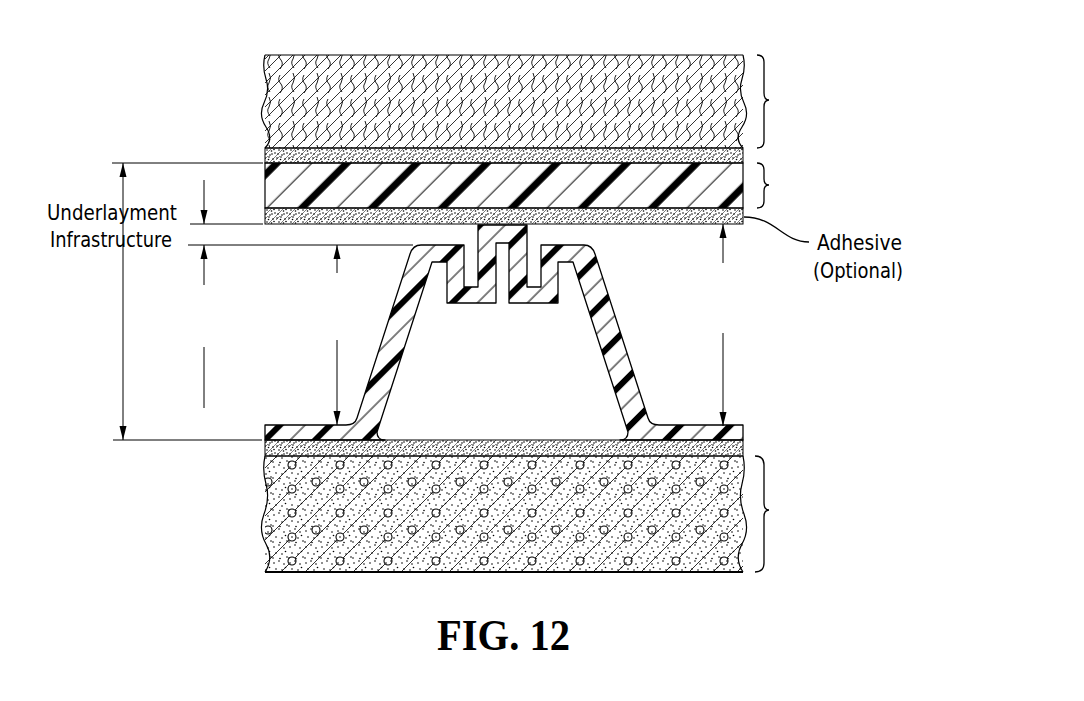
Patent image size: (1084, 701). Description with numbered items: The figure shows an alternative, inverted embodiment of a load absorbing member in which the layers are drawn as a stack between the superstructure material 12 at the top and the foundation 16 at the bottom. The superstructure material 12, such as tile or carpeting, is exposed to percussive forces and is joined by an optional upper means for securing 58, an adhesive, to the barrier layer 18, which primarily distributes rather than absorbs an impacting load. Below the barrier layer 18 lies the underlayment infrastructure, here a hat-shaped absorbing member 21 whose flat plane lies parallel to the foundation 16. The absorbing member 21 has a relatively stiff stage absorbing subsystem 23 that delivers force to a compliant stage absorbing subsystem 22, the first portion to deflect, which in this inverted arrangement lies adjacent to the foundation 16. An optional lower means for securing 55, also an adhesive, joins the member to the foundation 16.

The superstructure material 12 is at (769, 100).
The upper means for securing 58 is at (744, 157).
The barrier layer 18 is at (769, 185).
The absorbing member 21 is at (725, 393).
The compliant stage absorbing subsystem 22 is at (203, 395).
The stiff stage absorbing subsystem 23 is at (336, 395).
The lower means for securing 55 is at (744, 452).
The foundation 16 is at (769, 510).